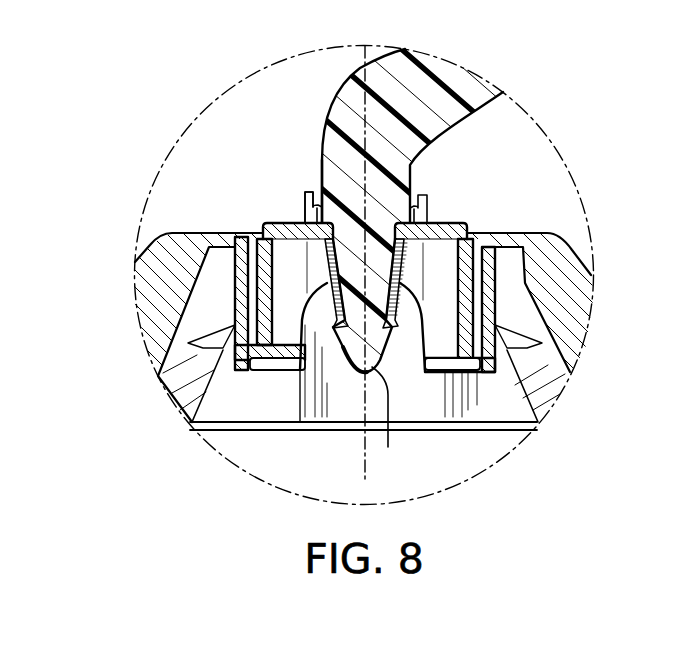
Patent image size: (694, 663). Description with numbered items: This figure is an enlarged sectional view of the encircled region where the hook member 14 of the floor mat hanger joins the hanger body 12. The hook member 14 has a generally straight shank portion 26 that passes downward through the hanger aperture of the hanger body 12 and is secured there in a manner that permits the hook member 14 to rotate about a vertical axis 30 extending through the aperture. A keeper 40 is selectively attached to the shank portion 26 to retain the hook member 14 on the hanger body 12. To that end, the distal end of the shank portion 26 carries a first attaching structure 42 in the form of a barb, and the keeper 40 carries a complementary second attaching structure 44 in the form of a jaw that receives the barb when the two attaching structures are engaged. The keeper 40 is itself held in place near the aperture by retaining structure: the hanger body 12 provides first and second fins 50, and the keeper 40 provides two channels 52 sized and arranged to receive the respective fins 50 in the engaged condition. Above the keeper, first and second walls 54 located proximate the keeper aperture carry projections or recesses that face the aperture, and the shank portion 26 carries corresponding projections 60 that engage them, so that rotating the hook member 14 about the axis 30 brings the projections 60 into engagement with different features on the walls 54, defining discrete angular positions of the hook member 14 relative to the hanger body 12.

The hanger body 12 is at (156, 237).
The hook member 14 is at (345, 72).
The shank portion 26 is at (326, 128).
The vertical axis 30 is at (363, 461).
The keeper 40 is at (497, 380).
The first attaching structure 42 is at (388, 398).
The second attaching structure 44 is at (325, 286).
The fin 50 is at (220, 340).
The channel 52 is at (264, 229).
The first wall 54 is at (306, 207).
The projection 60 is at (318, 190).